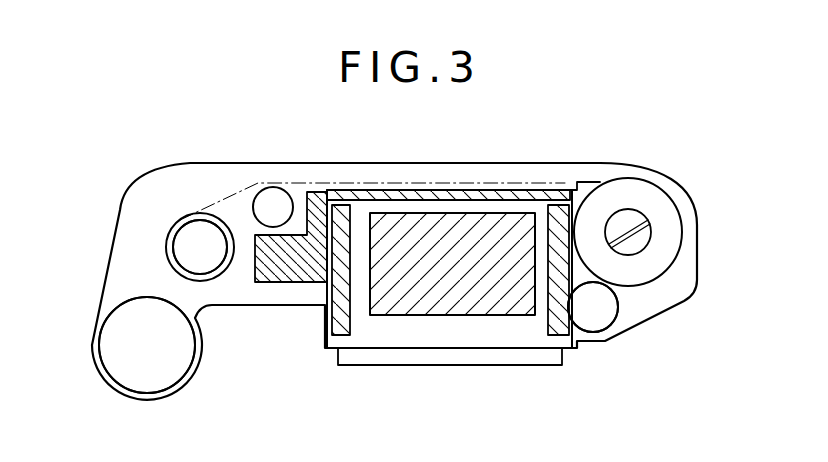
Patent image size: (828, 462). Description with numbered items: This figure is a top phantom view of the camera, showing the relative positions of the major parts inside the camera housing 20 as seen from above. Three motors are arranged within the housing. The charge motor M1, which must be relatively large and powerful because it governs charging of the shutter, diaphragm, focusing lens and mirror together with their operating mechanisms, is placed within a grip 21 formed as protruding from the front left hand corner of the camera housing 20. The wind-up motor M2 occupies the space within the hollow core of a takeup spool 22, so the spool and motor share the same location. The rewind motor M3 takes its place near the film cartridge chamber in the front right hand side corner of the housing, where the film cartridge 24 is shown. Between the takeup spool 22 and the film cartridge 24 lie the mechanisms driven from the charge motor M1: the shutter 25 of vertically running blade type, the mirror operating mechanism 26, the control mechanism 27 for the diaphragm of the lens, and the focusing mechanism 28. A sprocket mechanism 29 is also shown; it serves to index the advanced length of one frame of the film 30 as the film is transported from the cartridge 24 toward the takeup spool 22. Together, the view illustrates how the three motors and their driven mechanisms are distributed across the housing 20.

The camera housing 20 is at (537, 163).
The grip 21 is at (200, 363).
The takeup spool 22 is at (172, 233).
The film cartridge 24 is at (662, 267).
The shutter 25 is at (293, 278).
The mirror operating mechanism 26 is at (327, 352).
The control mechanism for the diaphragm 27 is at (583, 341).
The focusing mechanism 28 is at (442, 312).
The sprocket mechanism 29 is at (275, 193).
The film 30 is at (385, 190).
The charge motor M1 is at (135, 378).
The wind-up motor M2 is at (212, 258).
The rewind motor M3 is at (615, 323).